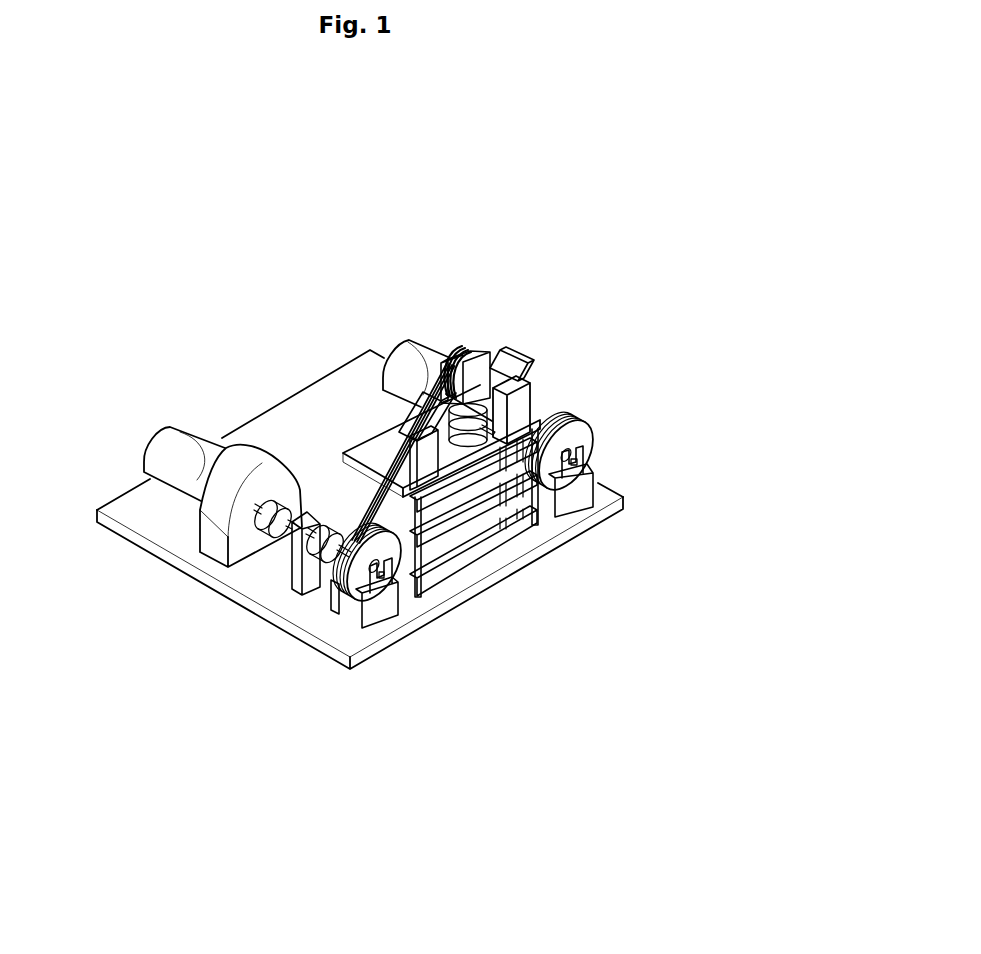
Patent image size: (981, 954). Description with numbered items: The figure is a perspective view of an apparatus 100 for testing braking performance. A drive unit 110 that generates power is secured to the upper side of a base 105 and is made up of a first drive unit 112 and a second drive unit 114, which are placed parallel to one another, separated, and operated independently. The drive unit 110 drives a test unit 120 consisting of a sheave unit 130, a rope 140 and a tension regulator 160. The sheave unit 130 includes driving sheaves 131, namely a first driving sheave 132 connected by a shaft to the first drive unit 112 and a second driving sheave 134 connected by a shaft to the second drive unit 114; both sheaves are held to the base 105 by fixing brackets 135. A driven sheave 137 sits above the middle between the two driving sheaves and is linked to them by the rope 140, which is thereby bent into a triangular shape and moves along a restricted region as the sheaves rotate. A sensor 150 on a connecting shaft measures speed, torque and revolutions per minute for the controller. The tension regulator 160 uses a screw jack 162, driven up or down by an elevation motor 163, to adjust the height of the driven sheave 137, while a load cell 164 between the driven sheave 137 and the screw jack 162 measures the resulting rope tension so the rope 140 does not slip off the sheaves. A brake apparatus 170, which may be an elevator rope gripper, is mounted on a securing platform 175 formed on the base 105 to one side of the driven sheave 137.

The apparatus for testing braking performance 100 is at (567, 157).
The base 105 is at (137, 497).
The drive unit 110 is at (300, 272).
The first drive unit 112 is at (173, 445).
The second drive unit 114 is at (390, 340).
The test unit 120 is at (458, 780).
The sheave unit 130 is at (592, 717).
The driving sheaves 131 is at (458, 667).
The first driving sheave 132 is at (473, 550).
The second driving sheave 134 is at (510, 525).
The fixing brackets 135 is at (377, 608).
The driven sheave 137 is at (557, 473).
The rope 140 is at (377, 553).
The sensor 150 is at (262, 555).
The tension regulator 160 is at (513, 238).
The screw jack 162 is at (450, 360).
The elevation motor 163 is at (424, 376).
The load cell 164 is at (447, 357).
The brake apparatus 170 is at (515, 353).
The securing platform 175 is at (520, 402).